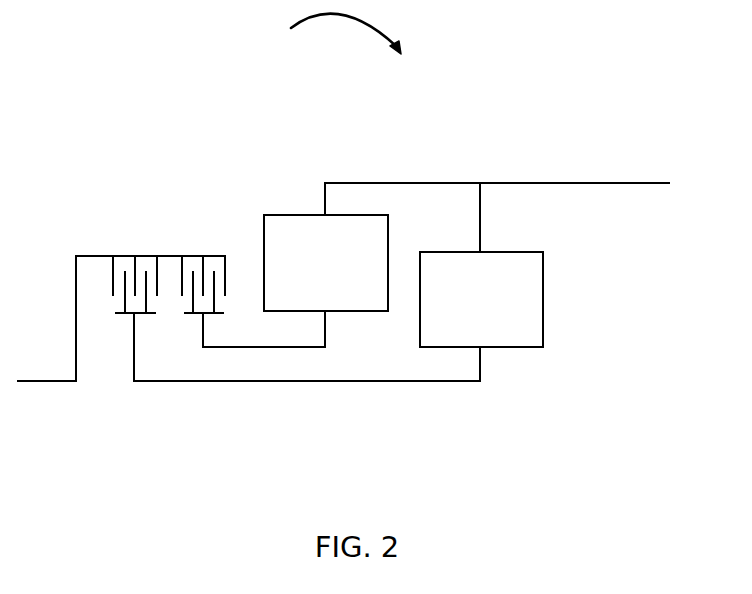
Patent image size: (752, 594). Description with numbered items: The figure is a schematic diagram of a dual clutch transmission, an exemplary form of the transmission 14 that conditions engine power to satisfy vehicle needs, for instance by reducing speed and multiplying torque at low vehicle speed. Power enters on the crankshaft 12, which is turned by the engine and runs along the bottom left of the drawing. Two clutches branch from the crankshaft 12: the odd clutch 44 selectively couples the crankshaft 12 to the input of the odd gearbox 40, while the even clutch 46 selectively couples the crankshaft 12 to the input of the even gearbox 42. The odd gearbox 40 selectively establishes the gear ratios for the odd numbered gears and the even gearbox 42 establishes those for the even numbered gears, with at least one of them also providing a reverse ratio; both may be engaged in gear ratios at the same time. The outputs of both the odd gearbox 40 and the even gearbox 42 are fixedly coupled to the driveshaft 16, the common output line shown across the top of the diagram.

The crankshaft 12 is at (53, 381).
The transmission 14 is at (325, 41).
The driveshaft 16 is at (582, 183).
The odd gearbox 40 is at (291, 215).
The even gearbox 42 is at (543, 311).
The odd clutch 44 is at (213, 256).
The even clutch 46 is at (146, 256).